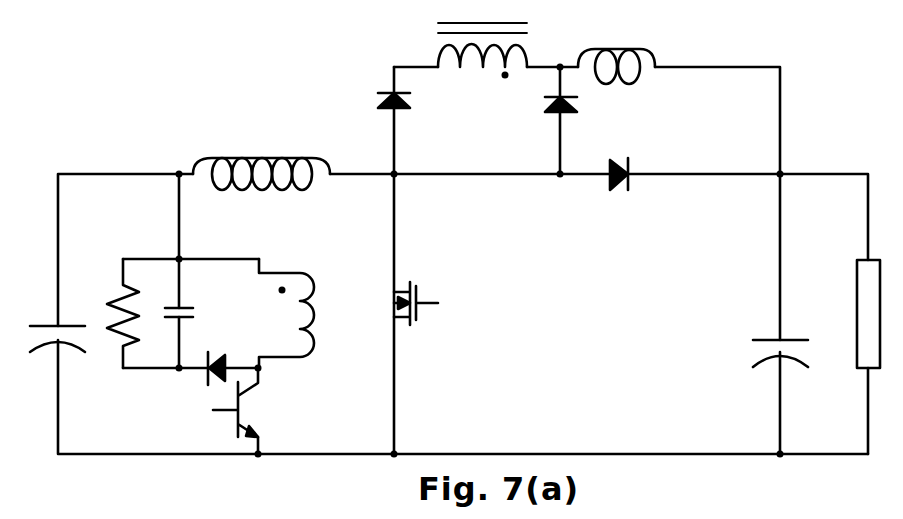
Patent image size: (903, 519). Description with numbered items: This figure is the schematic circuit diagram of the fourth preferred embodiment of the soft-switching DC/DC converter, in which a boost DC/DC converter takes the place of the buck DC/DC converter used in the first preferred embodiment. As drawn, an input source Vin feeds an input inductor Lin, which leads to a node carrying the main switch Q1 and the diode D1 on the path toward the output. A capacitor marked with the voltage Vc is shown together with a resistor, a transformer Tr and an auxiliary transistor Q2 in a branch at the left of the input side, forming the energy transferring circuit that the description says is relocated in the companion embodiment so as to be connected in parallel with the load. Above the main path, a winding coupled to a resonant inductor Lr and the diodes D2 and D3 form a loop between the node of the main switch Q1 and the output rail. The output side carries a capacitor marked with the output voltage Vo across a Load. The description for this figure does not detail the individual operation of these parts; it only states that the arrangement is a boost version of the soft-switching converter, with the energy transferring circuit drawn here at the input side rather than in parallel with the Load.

The input voltage source Vin is at (53, 321).
The input inductor Lin is at (261, 159).
The capacitor voltage Vc is at (167, 313).
The transformer Tr is at (261, 322).
The auxiliary transistor Q2 is at (214, 411).
The main switch MOSFET Q1 is at (432, 303).
The diode D1 is at (628, 190).
The diode D2 is at (377, 101).
The diode D3 is at (531, 114).
The resonant inductor Lr is at (616, 51).
The output voltage capacitor Vo is at (765, 350).
The load Load is at (849, 331).